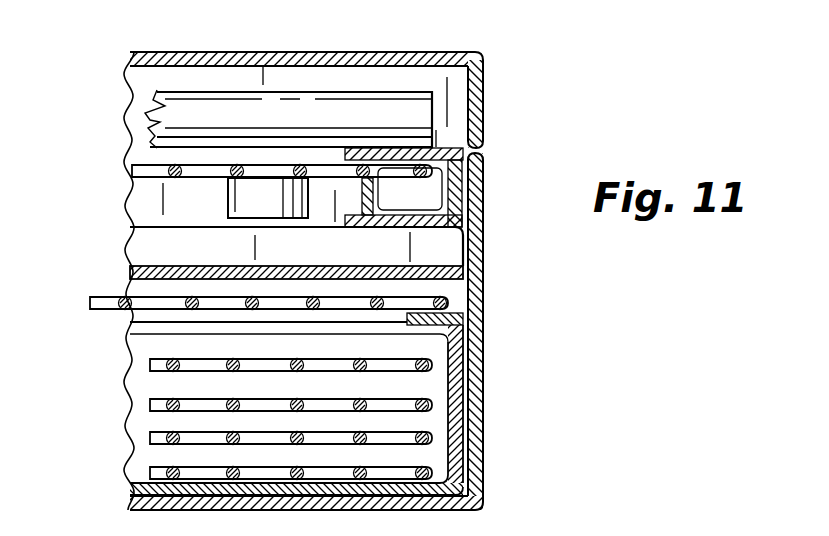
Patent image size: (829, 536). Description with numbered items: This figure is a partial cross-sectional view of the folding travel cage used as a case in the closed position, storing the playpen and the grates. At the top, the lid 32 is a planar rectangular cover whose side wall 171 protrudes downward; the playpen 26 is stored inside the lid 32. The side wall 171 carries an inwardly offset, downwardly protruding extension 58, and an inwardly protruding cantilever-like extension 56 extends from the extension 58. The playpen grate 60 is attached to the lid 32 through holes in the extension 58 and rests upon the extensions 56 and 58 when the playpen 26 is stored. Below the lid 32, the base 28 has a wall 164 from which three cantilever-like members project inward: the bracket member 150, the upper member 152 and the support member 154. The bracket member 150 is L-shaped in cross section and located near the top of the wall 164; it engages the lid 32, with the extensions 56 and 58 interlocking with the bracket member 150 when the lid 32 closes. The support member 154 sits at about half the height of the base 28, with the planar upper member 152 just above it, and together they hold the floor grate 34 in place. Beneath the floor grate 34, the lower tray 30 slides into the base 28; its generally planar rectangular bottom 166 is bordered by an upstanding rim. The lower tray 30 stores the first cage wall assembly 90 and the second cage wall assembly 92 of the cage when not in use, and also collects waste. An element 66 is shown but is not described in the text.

The lid 32 is at (339, 52).
The side wall 171 is at (485, 100).
The playpen 26 is at (150, 118).
The cantilever-like extension 56 is at (376, 147).
The extension 58 is at (483, 184).
The playpen grate 60 is at (150, 172).
The component 66 is at (253, 207).
The bracket member 150 is at (392, 232).
The upper member 152 is at (437, 268).
The floor grate 34 is at (117, 312).
The wall 164 is at (485, 311).
The support member 154 is at (483, 352).
The bottom 166 is at (140, 486).
The first cage wall assembly 90 is at (148, 362).
The second cage wall assembly 92 is at (150, 405).
The base 28 is at (484, 416).
The lower tray 30 is at (483, 455).